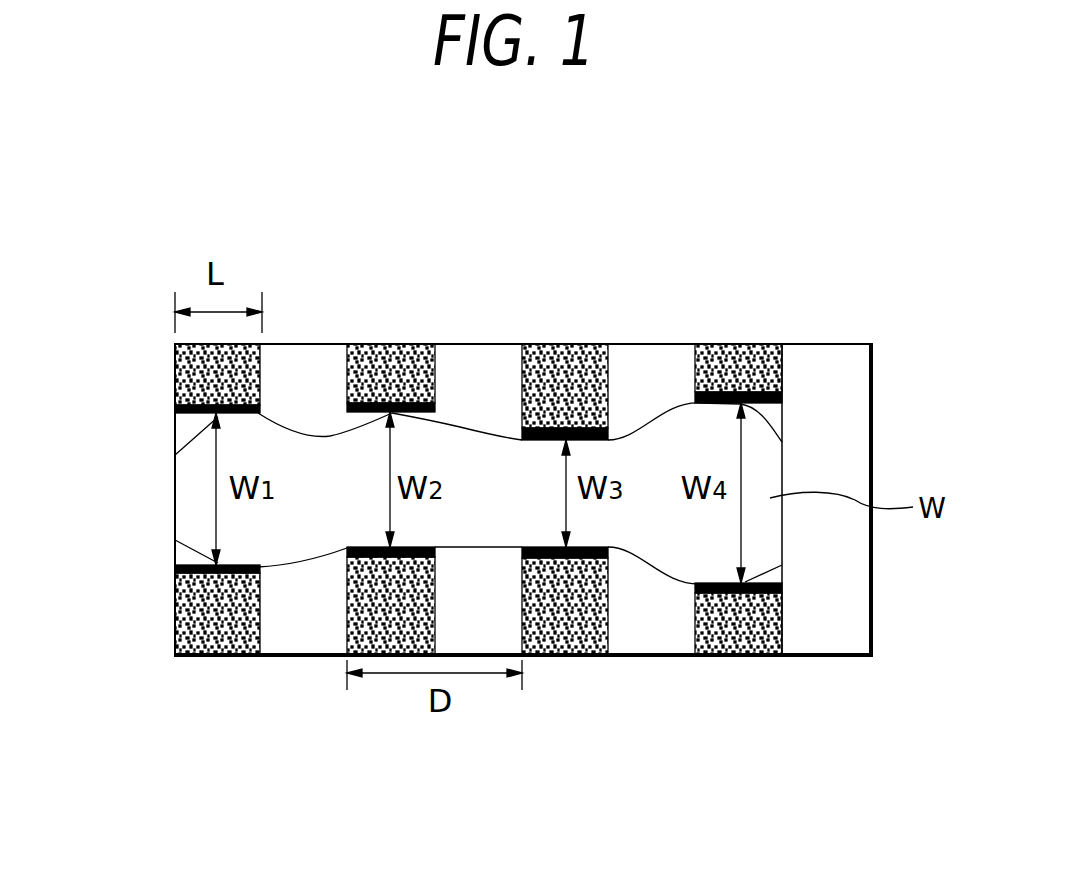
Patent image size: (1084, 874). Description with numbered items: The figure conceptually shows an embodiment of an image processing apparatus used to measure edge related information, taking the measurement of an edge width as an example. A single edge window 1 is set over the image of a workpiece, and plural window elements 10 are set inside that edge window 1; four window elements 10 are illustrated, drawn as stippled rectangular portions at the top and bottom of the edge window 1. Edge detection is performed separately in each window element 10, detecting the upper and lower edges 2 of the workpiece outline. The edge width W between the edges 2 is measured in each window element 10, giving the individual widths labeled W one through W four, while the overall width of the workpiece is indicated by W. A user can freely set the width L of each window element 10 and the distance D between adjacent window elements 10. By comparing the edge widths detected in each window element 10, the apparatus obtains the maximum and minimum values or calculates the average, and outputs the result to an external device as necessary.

The edge window 1 is at (826, 344).
The edge 2 is at (386, 398).
The window element 10 is at (230, 640).